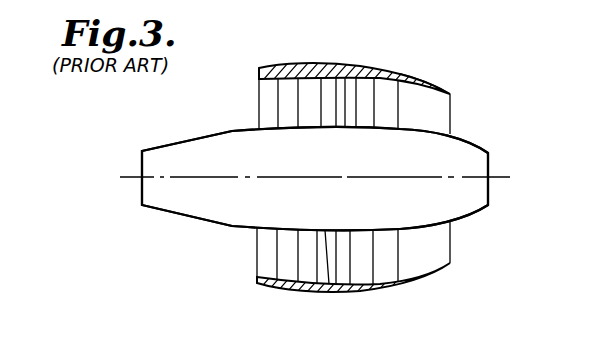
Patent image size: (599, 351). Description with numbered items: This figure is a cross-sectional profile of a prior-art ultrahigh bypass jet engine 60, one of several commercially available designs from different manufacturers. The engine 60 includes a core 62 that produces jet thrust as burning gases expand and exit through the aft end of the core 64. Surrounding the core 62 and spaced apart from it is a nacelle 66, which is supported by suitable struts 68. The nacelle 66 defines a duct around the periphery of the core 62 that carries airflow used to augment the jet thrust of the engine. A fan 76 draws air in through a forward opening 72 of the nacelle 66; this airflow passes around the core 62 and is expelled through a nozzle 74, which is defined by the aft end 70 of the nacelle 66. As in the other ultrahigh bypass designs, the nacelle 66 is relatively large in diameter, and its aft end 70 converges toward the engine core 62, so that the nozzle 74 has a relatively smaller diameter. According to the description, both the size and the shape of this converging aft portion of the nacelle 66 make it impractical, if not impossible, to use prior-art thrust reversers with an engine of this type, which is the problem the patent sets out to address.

The ultrahigh bypass engine 60 is at (182, 229).
The core 62 is at (181, 146).
The aft end of the core 64 is at (490, 147).
The nacelle 66 is at (328, 63).
The struts 68 is at (383, 88).
The aft end of the nacelle 70 is at (438, 84).
The forward opening 72 is at (266, 94).
The nozzle 74 is at (444, 118).
The fan 76 is at (300, 91).